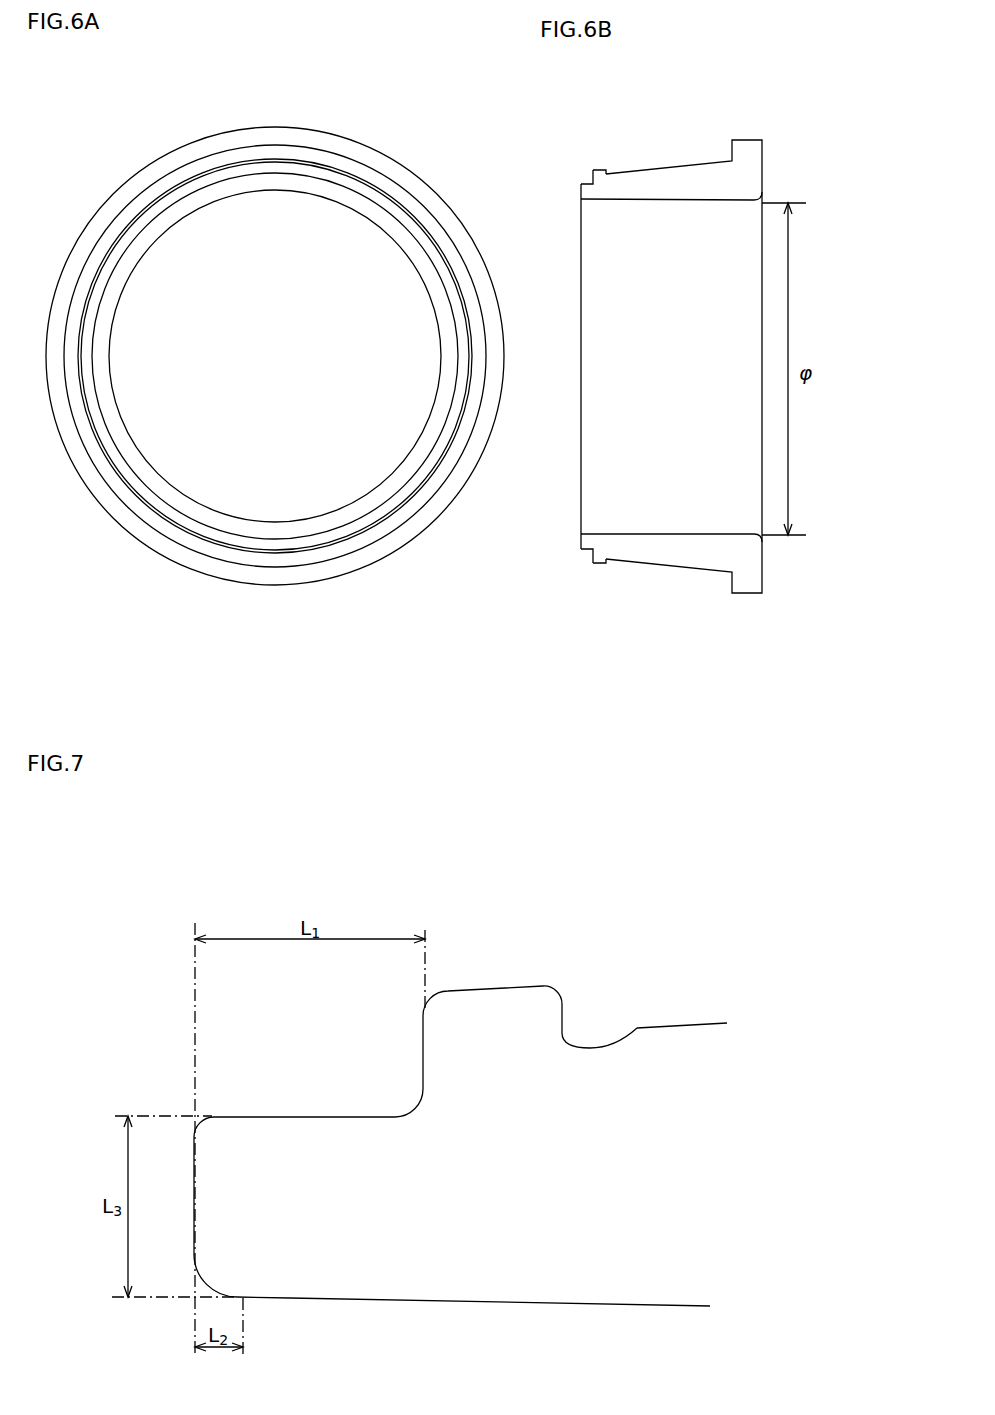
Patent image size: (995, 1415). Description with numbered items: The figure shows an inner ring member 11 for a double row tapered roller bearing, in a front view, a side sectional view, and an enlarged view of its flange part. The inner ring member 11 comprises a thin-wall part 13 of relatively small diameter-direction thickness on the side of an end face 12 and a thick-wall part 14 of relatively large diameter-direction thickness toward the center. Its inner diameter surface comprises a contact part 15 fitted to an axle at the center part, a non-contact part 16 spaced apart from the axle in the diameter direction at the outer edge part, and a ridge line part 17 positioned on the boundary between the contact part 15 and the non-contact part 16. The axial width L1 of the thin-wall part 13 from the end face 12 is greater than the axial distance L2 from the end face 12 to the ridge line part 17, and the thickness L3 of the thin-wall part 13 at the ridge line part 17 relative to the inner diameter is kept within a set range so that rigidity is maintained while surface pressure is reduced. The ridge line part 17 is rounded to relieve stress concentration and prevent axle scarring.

In FIG. 6A, the inner ring member 11 is at (123, 132).
In FIG. 7, the inner ring member 11 is at (175, 900).
In FIG. 6B, the end face 12 is at (581, 190).
In FIG. 7, the end face 12 is at (194, 1193).
In FIG. 6B, the thin-wall part 13 is at (590, 183).
In FIG. 7, the thin-wall part 13 is at (248, 1150).
In FIG. 6B, the thick-wall part 14 is at (602, 170).
In FIG. 7, the thick-wall part 14 is at (492, 1015).
In FIG. 7, the contact part 15 is at (465, 1302).
In FIG. 7, the non-contact part 16 is at (222, 1290).
In FIG. 7, the ridge line part 17 is at (245, 1298).